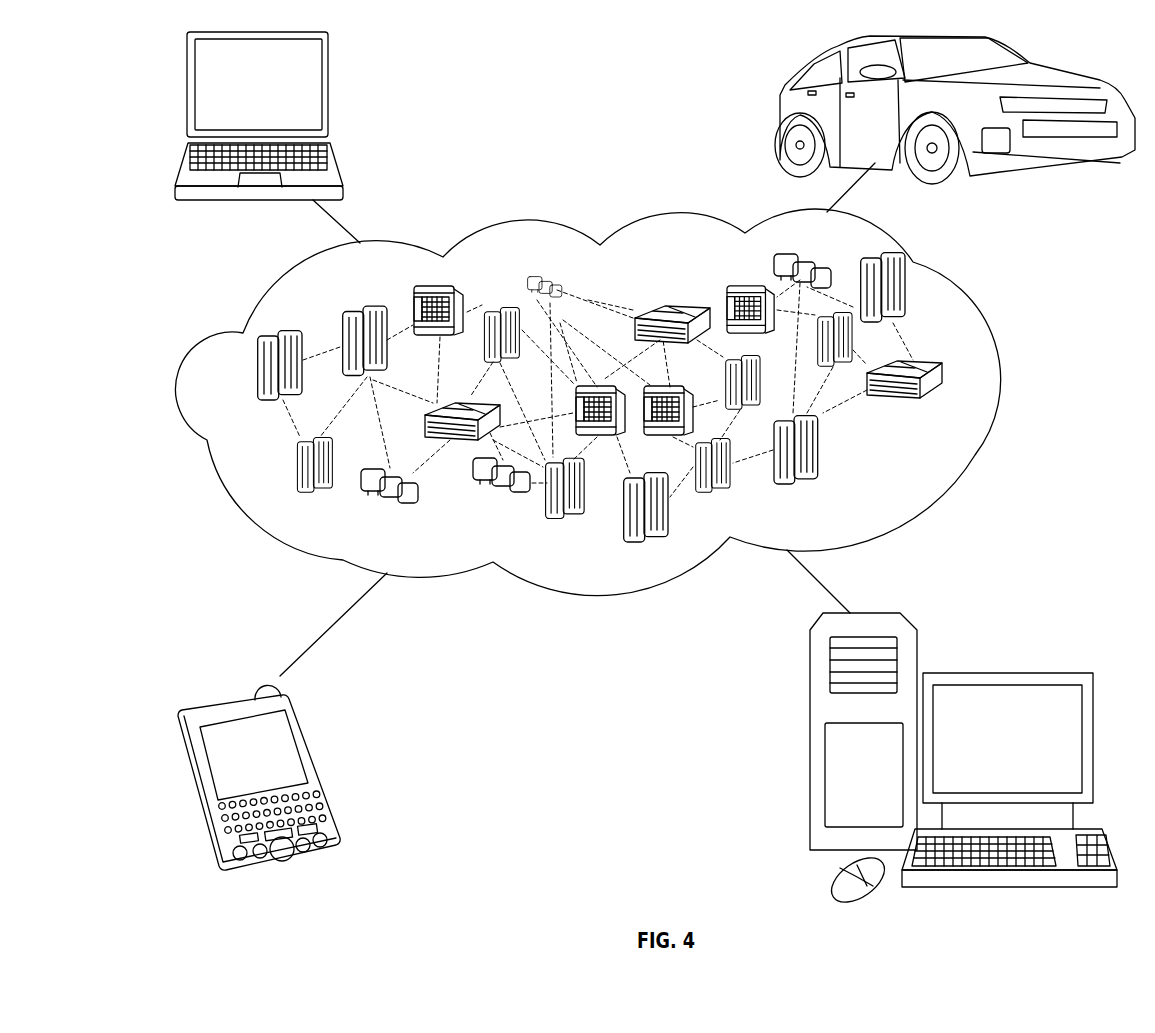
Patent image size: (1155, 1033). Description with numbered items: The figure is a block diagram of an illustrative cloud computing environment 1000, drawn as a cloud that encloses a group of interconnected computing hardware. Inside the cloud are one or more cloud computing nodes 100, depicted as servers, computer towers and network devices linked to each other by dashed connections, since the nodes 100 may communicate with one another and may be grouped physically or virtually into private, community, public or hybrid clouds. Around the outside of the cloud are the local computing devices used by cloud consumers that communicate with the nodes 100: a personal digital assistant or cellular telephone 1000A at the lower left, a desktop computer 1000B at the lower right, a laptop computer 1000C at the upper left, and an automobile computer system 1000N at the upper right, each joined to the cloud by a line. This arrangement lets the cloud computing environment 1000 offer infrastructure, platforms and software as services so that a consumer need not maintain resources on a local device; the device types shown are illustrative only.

The cloud computing environment 1000 is at (1008, 376).
The cloud computing nodes 100 is at (945, 406).
The personal digital assistant or cellular telephone 1000A is at (318, 768).
The desktop computer 1000B is at (1005, 673).
The laptop computer 1000C is at (330, 95).
The automobile computer system 1000N is at (777, 110).